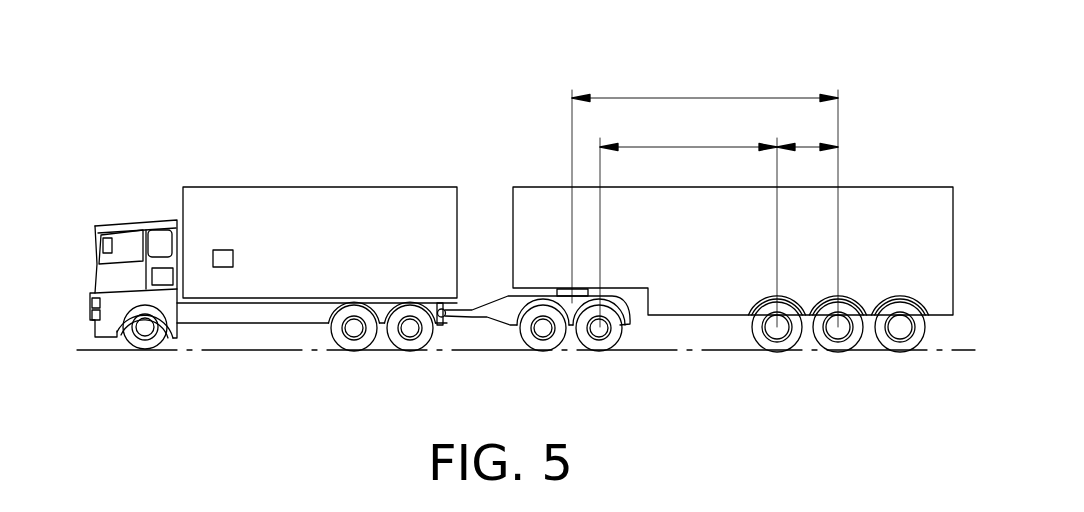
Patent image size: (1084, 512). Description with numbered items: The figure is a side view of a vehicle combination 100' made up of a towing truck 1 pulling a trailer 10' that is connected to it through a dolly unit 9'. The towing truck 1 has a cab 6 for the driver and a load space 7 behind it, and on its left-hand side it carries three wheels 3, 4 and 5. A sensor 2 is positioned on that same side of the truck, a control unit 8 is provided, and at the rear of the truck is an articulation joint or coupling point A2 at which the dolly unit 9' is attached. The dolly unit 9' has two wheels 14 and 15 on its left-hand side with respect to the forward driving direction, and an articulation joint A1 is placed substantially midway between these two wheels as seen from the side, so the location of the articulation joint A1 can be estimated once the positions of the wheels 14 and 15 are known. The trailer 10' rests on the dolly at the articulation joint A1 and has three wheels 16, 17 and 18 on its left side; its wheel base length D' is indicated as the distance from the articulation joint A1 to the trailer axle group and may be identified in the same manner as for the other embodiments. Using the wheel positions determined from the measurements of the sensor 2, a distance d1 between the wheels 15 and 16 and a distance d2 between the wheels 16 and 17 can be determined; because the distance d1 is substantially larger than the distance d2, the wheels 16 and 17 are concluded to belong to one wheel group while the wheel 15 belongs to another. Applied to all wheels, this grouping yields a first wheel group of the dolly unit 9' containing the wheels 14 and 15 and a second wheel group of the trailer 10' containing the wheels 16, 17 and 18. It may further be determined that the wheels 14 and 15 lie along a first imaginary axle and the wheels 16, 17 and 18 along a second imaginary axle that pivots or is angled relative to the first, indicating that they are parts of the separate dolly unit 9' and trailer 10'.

The vehicle combination 100' is at (505, 216).
The towing truck 1 is at (320, 187).
The load space 7 is at (320, 242).
The sensor 2 is at (161, 268).
The wheel 3 is at (146, 330).
The wheel 4 is at (354, 331).
The wheel 5 is at (410, 331).
The cab 6 is at (87, 282).
The control unit 8 is at (222, 250).
The dolly unit 9' is at (537, 344).
The trailer 10' is at (733, 221).
The wheel 14 is at (543, 331).
The wheel 15 is at (599, 331).
The wheel 16 is at (777, 330).
The wheel 17 is at (838, 330).
The wheel 18 is at (900, 330).
The articulation joint A1 is at (567, 293).
The articulation joint (coupling point) A2 is at (440, 325).
The wheel base length D' is at (705, 198).
The distance d1 is at (688, 221).
The distance d2 is at (807, 133).